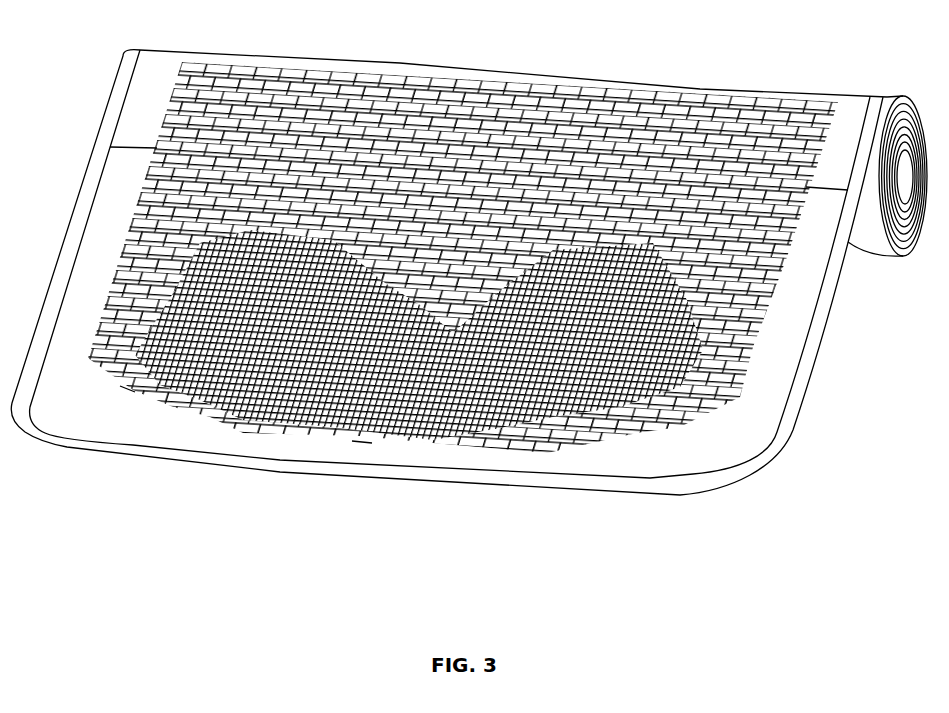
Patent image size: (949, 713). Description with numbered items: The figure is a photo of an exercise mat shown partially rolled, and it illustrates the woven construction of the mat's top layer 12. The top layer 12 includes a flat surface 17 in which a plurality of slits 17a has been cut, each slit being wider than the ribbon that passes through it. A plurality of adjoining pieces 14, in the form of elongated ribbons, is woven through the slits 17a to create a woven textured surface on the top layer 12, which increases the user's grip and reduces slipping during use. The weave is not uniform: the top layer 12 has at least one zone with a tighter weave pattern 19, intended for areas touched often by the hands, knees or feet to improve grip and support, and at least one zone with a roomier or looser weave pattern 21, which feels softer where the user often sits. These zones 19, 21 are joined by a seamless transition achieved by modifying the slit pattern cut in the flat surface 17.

The top layer 12 is at (745, 436).
The plurality of adjoining pieces 14 is at (765, 306).
The flat surface 17 is at (857, 113).
The plurality of slits 17a is at (362, 443).
The zone with a tighter weave pattern 19 is at (258, 264).
The zone with a roomier or looser weave pattern 21 is at (127, 388).